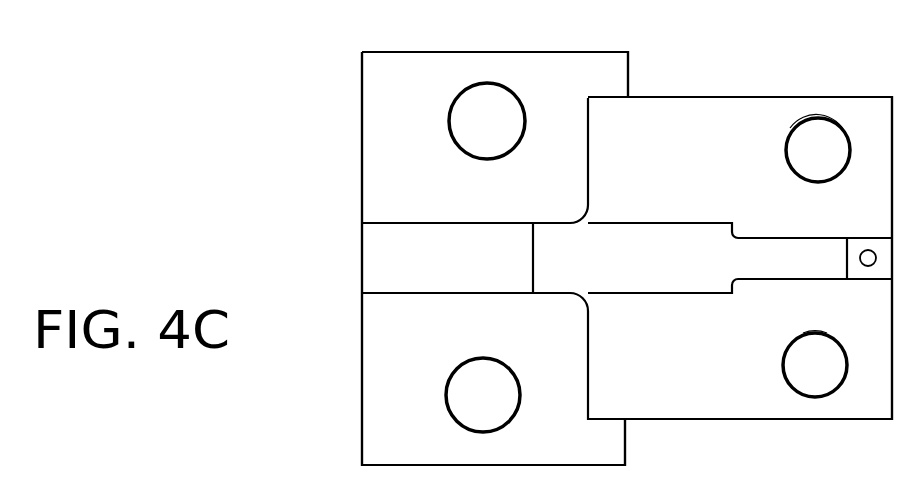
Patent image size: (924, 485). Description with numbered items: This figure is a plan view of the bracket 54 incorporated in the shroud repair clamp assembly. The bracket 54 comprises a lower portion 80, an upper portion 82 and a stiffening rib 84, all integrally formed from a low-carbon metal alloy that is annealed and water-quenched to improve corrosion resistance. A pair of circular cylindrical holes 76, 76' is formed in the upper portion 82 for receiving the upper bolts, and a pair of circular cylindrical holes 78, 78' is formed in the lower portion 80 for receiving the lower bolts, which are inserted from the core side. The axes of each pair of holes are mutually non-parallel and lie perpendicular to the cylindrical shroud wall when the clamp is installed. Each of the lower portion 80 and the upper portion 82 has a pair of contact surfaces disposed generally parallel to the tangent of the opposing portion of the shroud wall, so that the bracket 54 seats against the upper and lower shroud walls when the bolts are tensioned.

The bracket 54 is at (295, 241).
The upper hole 76 is at (787, 364).
The upper hole 76' is at (785, 148).
The lower hole 78 is at (401, 395).
The lower hole 78' is at (414, 88).
The lower portion 80 is at (360, 162).
The upper portion 82 is at (678, 97).
The stiffening rib 84 is at (603, 237).